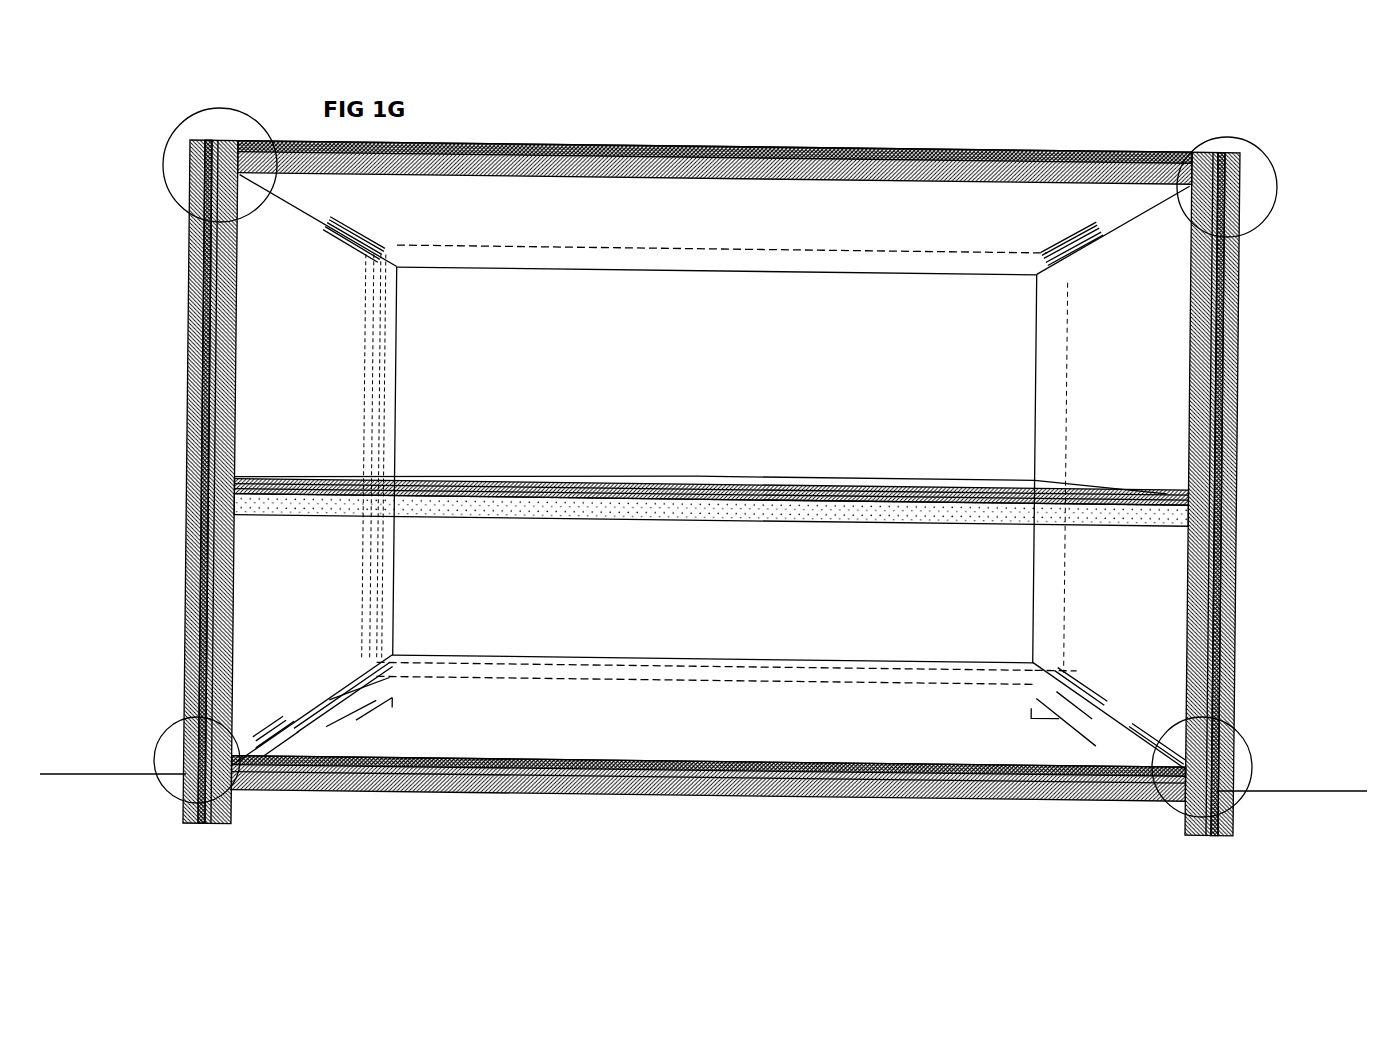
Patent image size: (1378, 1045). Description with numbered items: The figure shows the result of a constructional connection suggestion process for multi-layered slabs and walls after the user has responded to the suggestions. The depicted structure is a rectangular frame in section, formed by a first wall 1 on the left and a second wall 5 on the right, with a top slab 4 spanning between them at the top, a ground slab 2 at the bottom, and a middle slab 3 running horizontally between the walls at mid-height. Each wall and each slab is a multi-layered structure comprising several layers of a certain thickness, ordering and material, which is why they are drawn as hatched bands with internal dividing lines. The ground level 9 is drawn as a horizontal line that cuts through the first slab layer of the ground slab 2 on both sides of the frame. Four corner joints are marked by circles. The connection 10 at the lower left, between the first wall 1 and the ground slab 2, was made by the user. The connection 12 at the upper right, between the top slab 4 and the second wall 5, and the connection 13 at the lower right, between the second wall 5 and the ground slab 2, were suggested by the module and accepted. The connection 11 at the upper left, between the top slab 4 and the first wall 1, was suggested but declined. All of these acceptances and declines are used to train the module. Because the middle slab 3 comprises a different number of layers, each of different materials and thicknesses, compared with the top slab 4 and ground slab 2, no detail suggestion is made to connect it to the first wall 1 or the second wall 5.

The first wall 1 is at (232, 818).
The ground slab 2 is at (560, 793).
The middle slab 3 is at (722, 492).
The top slab 4 is at (1123, 148).
The second wall 5 is at (1193, 838).
The ground level 9 is at (118, 773).
The connection 10 is at (173, 718).
The connection 11 is at (165, 166).
The connection 12 is at (1270, 188).
The connection 13 is at (1253, 768).